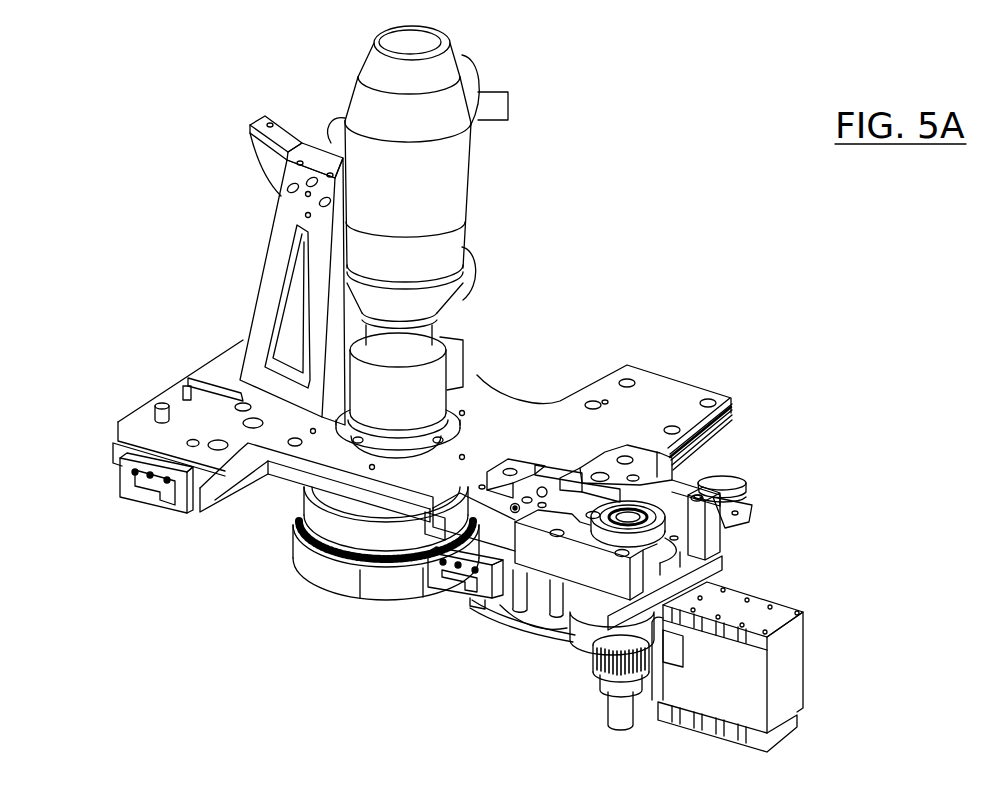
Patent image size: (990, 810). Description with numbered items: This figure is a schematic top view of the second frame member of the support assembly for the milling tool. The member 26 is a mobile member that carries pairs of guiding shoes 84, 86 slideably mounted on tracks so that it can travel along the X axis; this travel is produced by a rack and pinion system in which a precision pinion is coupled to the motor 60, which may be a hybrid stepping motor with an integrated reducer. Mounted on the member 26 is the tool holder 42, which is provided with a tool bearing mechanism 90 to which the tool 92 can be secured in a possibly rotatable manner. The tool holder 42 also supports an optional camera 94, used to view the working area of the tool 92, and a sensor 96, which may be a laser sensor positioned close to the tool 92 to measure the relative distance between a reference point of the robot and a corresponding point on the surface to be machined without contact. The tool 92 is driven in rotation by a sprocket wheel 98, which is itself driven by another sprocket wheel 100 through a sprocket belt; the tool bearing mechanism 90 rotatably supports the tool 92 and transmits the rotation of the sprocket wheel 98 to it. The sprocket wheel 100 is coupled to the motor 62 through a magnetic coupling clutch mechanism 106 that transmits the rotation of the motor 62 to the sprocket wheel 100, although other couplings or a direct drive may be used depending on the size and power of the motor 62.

The member 26 is at (667, 385).
The tool holder 42 is at (572, 577).
The motor 60 is at (473, 278).
The motor 62 is at (462, 198).
The guiding shoes 84 is at (480, 597).
The linear bearing block 86 is at (117, 485).
The tool bearing mechanism 90 is at (673, 568).
The tool 92 is at (613, 710).
The camera 94 is at (733, 477).
The sensor 96 is at (790, 675).
The sprocket wheel 98 is at (597, 672).
The sprocket wheel 100 is at (295, 560).
The magnetic coupling clutch mechanism 106 is at (440, 375).